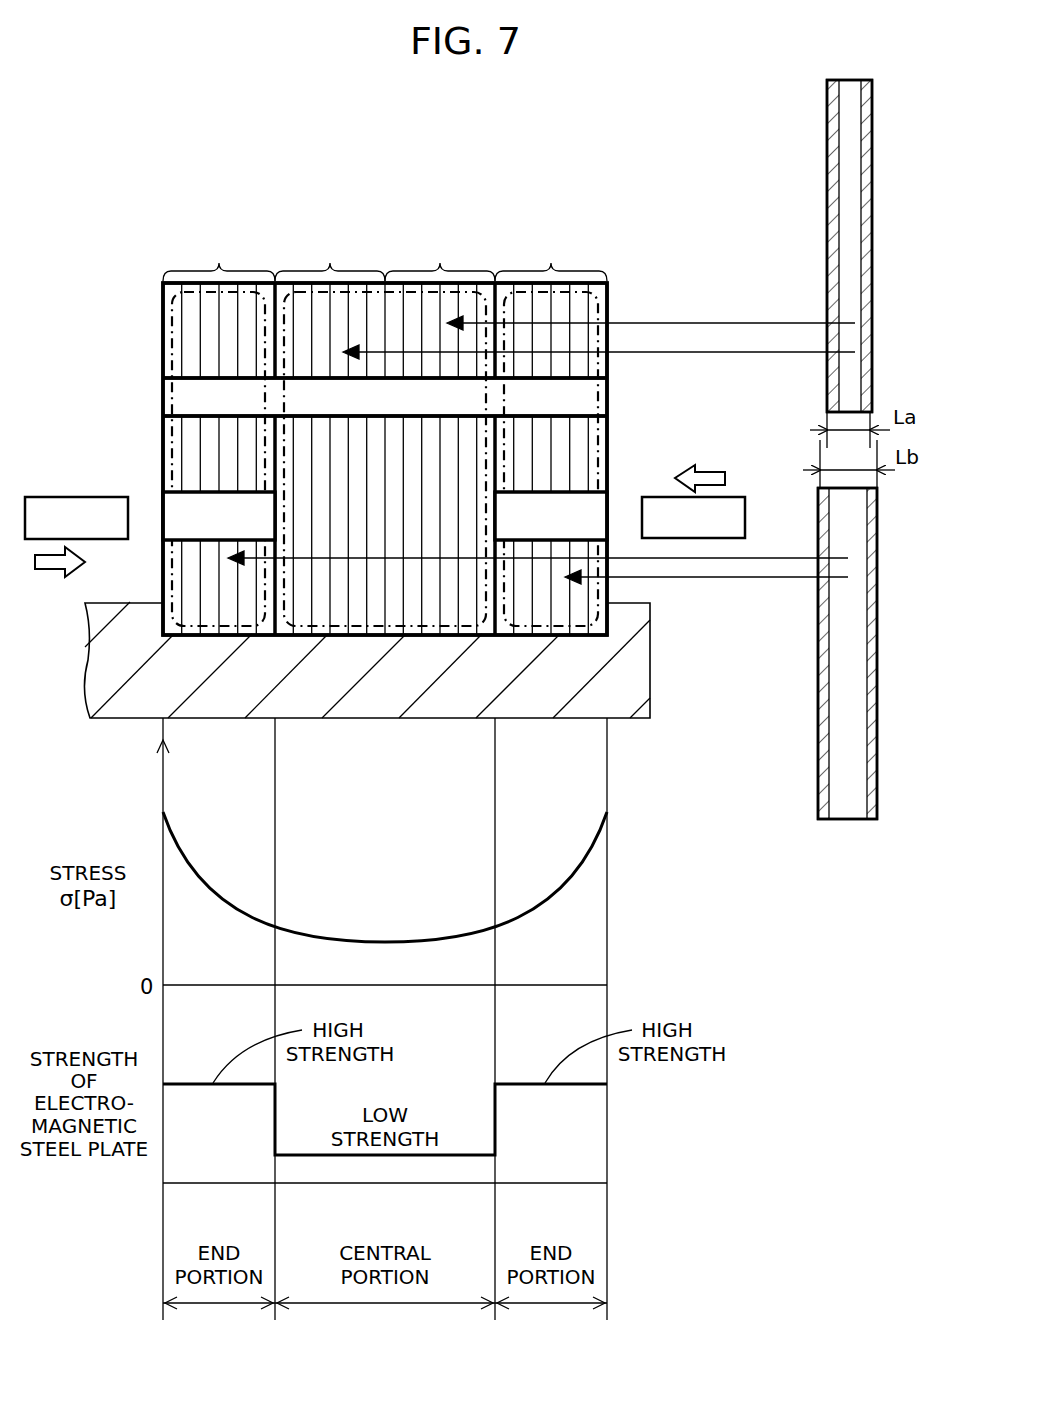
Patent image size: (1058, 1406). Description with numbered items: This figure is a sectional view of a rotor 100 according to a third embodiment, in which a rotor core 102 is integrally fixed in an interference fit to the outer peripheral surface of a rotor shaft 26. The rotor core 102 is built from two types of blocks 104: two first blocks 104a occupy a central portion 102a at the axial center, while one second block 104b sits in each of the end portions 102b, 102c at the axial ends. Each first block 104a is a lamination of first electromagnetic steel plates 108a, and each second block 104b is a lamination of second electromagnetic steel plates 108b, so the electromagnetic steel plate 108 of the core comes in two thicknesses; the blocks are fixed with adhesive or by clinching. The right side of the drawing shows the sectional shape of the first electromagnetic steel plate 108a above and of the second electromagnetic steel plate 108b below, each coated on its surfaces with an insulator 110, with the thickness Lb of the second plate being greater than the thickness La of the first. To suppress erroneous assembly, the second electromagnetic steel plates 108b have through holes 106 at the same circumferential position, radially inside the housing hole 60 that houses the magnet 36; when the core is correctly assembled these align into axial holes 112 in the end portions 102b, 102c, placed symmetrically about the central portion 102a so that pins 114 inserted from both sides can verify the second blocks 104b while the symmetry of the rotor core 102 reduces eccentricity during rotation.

The rotor 100 is at (241, 121).
The rotor core 102 is at (498, 205).
The central portion 102a is at (367, 290).
The end portion 102b is at (152, 357).
The end portion 102c is at (615, 366).
The blocks 104 is at (385, 243).
The first block 104a is at (384, 433).
The second block 104b is at (385, 433).
The through hole 106 is at (382, 513).
The electromagnetic steel plate 108 is at (469, 449).
The first electromagnetic steel plate 108a is at (821, 181).
The second electromagnetic steel plate 108b is at (814, 685).
The insulator 110 is at (827, 232).
The holes 112 is at (195, 527).
The pins 114 is at (88, 515).
The housing hole 60 is at (190, 380).
The magnet 36 is at (590, 399).
The rotor shaft 26 is at (128, 703).